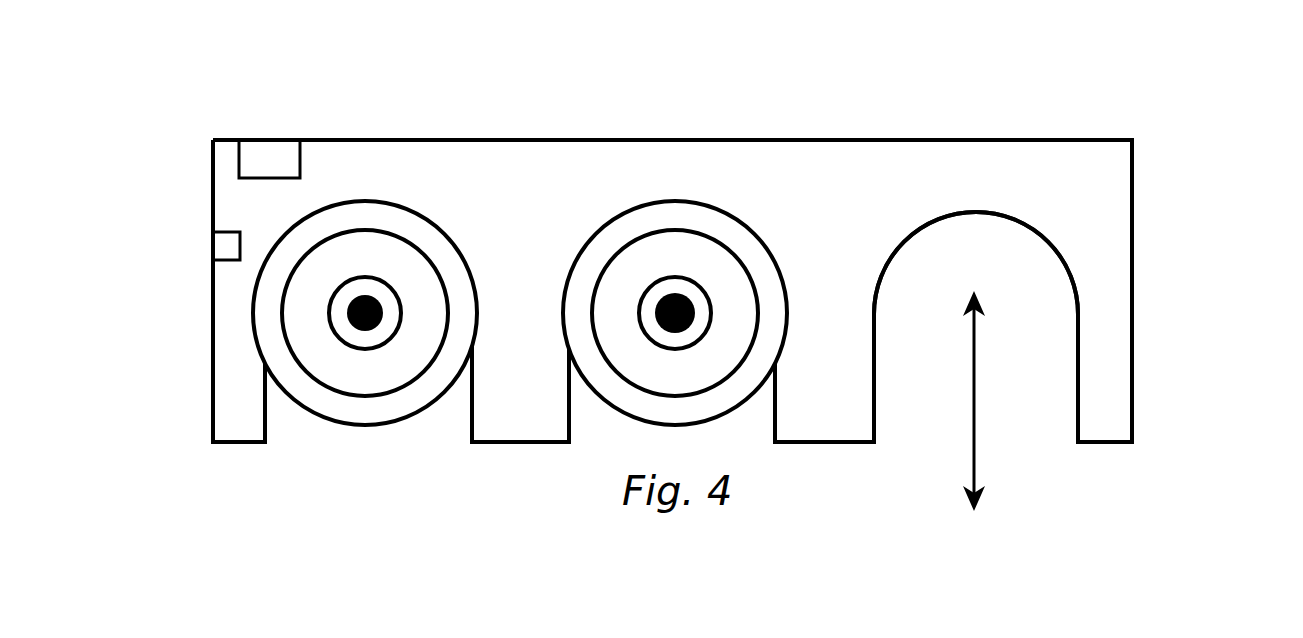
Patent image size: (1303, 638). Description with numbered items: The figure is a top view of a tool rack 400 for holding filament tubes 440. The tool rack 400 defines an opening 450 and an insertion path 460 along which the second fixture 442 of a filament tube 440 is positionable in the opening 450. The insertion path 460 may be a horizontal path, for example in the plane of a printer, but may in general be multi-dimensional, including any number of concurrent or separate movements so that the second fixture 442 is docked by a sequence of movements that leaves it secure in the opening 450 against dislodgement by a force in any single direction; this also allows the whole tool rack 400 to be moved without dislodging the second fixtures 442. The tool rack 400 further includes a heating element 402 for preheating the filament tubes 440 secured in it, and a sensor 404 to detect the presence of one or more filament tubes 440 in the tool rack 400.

The tool rack 400 is at (1030, 84).
The heating element 402 is at (274, 158).
The sensor 404 is at (225, 245).
The filament tube 440 is at (366, 258).
The second fixture 442 is at (361, 337).
The opening 450 is at (1020, 266).
The insertion path 460 is at (975, 413).